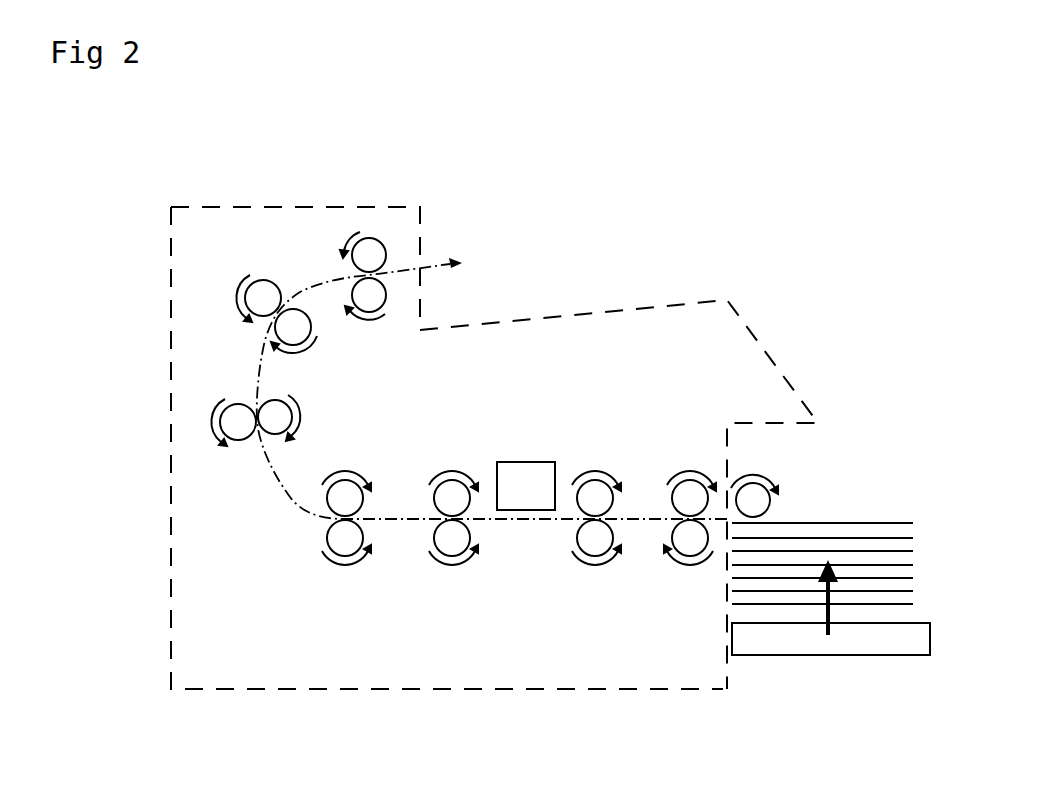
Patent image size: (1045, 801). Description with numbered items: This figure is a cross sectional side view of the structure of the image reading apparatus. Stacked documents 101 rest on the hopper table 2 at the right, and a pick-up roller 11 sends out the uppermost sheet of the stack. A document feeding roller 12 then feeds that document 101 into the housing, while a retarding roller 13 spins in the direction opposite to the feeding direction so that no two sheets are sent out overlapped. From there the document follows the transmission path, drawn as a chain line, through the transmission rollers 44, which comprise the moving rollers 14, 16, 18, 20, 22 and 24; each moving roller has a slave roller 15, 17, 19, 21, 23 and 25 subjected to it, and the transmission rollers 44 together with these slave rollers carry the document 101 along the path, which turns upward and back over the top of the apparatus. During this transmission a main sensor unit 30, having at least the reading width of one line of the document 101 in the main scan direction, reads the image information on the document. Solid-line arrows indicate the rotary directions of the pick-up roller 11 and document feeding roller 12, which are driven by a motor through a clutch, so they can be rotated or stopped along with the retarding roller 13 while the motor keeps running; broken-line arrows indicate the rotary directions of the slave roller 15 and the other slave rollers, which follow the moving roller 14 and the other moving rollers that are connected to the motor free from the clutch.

The hopper table 2 is at (860, 648).
The stacked documents 101 is at (868, 538).
The pick-up roller 11 is at (758, 495).
The document feeding roller 12 is at (692, 495).
The retarding roller 13 is at (690, 545).
The moving roller 14 is at (595, 495).
The slave roller 15 is at (595, 545).
The moving roller 16 is at (452, 492).
The slave roller 17 is at (452, 545).
The moving roller 18 is at (332, 500).
The slave roller 19 is at (345, 545).
The moving roller 20 is at (260, 402).
The slave roller 21 is at (220, 417).
The moving roller 22 is at (293, 318).
The slave roller 23 is at (257, 295).
The moving roller 24 is at (369, 295).
The slave roller 25 is at (369, 250).
The main sensor unit 30 is at (537, 473).
The transmission rollers 44 is at (360, 452).